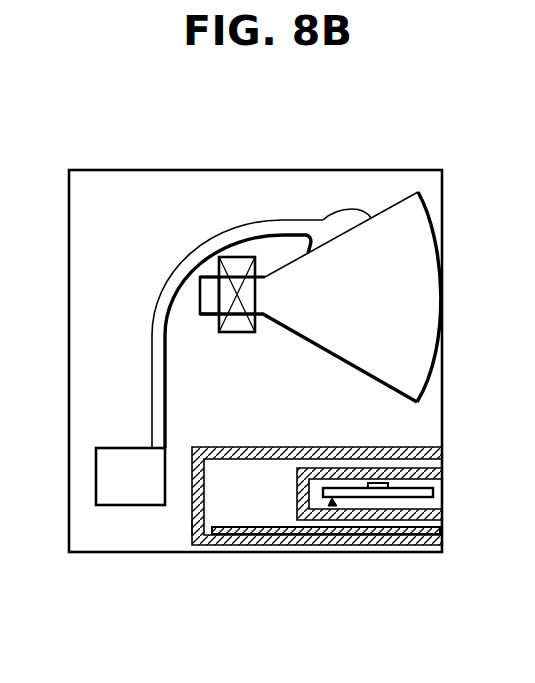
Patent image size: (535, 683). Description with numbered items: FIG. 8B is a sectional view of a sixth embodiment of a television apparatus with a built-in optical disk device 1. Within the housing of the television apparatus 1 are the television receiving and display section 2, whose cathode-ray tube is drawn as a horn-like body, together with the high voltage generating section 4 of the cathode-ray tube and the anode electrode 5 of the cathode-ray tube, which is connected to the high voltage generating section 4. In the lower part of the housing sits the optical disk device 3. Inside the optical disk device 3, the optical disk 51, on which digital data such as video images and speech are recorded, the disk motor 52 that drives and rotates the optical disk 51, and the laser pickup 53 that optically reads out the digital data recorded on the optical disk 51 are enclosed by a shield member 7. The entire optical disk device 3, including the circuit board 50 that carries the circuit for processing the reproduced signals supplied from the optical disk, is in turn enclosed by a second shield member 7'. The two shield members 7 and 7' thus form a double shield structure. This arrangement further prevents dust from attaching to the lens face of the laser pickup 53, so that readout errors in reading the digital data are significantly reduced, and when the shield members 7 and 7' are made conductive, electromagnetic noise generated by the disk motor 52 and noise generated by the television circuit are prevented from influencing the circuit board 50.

The television apparatus with a built-in optical disk device 1 is at (69, 192).
The television receiving and display section 2 is at (420, 196).
The optical disk device 3 is at (444, 480).
The high voltage generating section 4 is at (108, 477).
The anode electrode 5 is at (352, 209).
The shield member 7 is at (414, 556).
The shield member 7' is at (158, 566).
The circuit board 50 is at (268, 534).
The optical disk 51 is at (347, 500).
The disk motor 52 is at (400, 505).
The laser pickup 53 is at (332, 506).